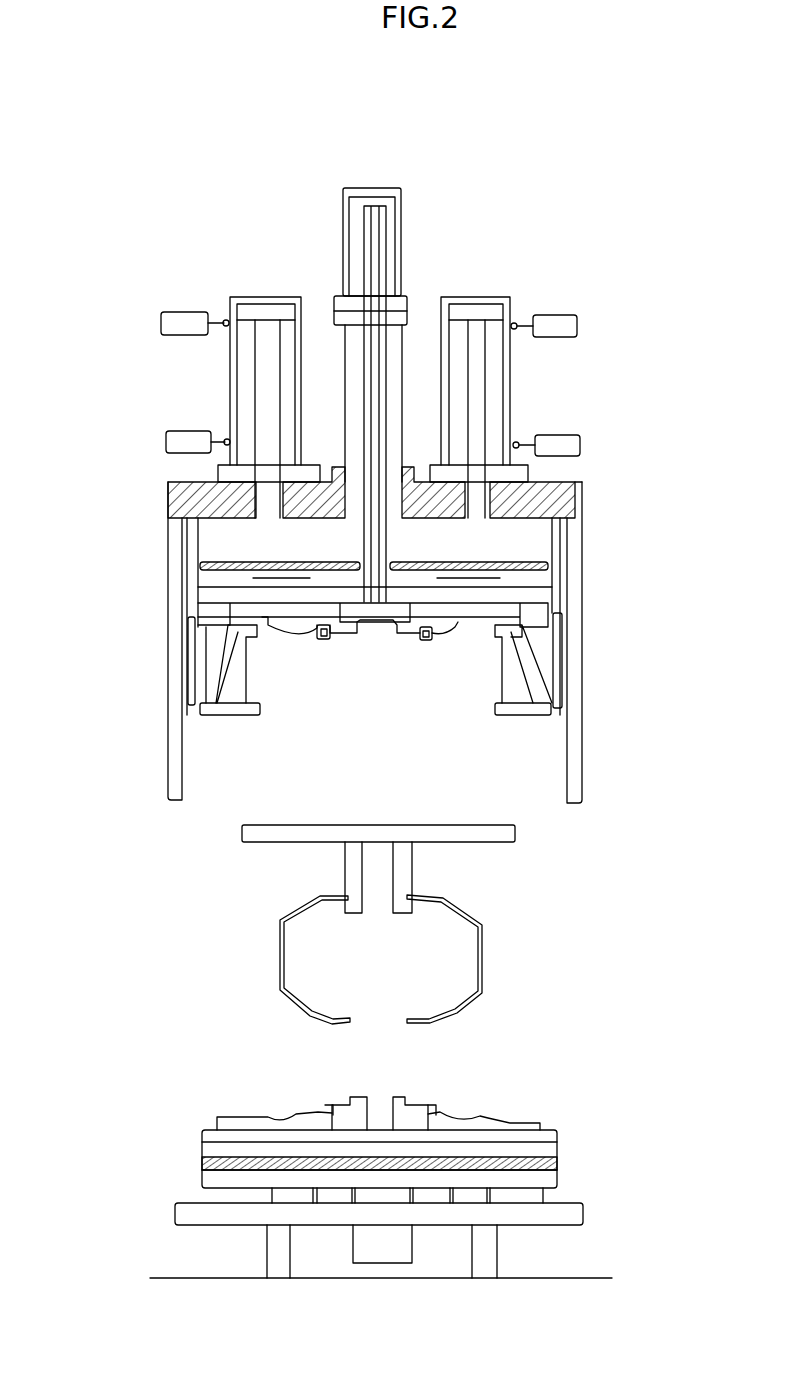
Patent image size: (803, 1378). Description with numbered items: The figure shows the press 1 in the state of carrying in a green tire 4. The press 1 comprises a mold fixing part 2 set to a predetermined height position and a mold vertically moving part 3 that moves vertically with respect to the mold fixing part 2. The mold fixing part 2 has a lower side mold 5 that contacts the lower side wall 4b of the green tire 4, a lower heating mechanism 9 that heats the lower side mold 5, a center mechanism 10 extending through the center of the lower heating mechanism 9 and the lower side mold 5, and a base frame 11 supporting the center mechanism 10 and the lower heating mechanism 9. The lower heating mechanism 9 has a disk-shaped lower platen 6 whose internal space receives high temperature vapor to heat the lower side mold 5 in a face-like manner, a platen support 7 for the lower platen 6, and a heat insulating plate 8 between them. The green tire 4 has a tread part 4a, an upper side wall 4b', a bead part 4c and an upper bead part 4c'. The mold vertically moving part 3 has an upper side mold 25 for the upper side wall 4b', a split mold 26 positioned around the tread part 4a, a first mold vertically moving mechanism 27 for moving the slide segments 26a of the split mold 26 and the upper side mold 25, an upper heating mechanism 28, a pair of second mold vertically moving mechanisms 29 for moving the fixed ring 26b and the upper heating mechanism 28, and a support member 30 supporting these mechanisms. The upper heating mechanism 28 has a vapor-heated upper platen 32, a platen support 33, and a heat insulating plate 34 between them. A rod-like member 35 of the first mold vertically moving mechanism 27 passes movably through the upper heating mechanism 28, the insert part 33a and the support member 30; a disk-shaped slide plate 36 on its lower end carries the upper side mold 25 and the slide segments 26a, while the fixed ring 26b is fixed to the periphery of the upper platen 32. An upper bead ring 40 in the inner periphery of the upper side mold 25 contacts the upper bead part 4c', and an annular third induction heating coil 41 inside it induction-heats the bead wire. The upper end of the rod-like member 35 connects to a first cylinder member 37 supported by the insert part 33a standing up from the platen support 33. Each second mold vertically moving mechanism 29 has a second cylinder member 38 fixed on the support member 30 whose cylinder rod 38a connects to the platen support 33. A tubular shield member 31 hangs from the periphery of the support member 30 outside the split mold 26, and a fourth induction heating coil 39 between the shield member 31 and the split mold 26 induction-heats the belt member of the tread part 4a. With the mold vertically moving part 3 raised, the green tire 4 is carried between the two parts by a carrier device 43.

The press 1 is at (712, 287).
The mold fixing part 2 is at (589, 1130).
The mold vertically moving part 3 is at (609, 278).
The green tire 4 is at (499, 919).
The tread part 4a is at (483, 970).
The lower side wall 4b is at (477, 1040).
The upper side wall 4b' is at (484, 877).
The bead part 4c is at (418, 986).
The upper bead part 4c' is at (431, 873).
The lower side mold 5 is at (480, 1123).
The lower platen 6 is at (553, 1150).
The platen support 7 is at (540, 1183).
The heat insulating plate 8 is at (545, 1168).
The lower heating mechanism 9 is at (630, 1135).
The center mechanism 10 is at (423, 1268).
The base frame 11 is at (545, 1215).
The upper side mold 25 is at (452, 622).
The split mold 26 is at (676, 648).
The slide segment 26a is at (522, 700).
The fixed ring 26b is at (535, 662).
The first mold vertically moving mechanism 27 is at (426, 217).
The upper heating mechanism 28 is at (660, 630).
The second mold vertically moving mechanism 29 is at (95, 375).
The support member 30 is at (576, 505).
The shield member 31 is at (576, 782).
The upper platen 32 is at (538, 578).
The platen support 33 is at (538, 535).
The insert part 33a is at (345, 391).
The heat insulating plate 34 is at (543, 563).
The rod-like member 35 is at (372, 381).
The slide plate 36 is at (510, 612).
The first cylinder member 37 is at (401, 262).
The second cylinder member 38 is at (231, 376).
The cylinder rod 38a is at (268, 408).
The fourth induction heating coil 39 is at (193, 640).
The upper bead ring 40 is at (405, 640).
The third induction heating coil 41 is at (418, 642).
The carrier device 43 is at (293, 832).